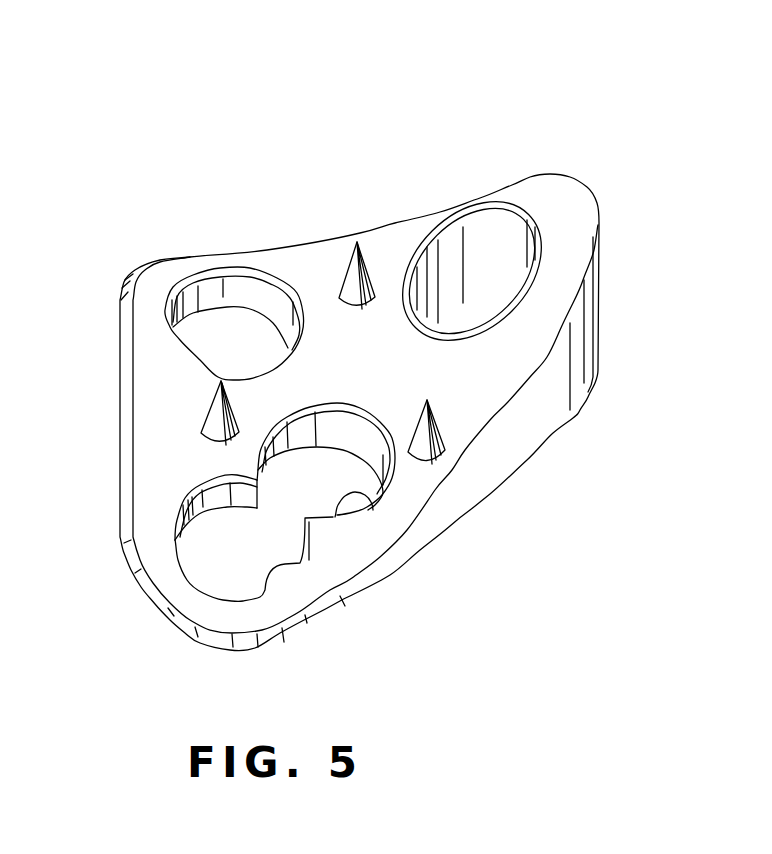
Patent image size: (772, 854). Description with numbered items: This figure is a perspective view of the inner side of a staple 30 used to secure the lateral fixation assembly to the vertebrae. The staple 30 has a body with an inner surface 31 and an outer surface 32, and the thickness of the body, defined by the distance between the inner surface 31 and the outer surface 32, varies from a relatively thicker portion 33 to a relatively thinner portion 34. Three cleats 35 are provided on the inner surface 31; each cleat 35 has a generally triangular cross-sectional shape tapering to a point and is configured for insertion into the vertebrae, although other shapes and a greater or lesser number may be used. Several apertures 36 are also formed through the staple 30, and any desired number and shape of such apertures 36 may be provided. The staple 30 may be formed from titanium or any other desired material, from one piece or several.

The staple 30 is at (645, 170).
The inner surface 31 is at (553, 288).
The outer surface 32 is at (527, 460).
The relatively thicker portion 33 is at (562, 393).
The relatively thinner portion 34 is at (771, 390).
The cleat 35 is at (360, 273).
The aperture 36 is at (236, 293).